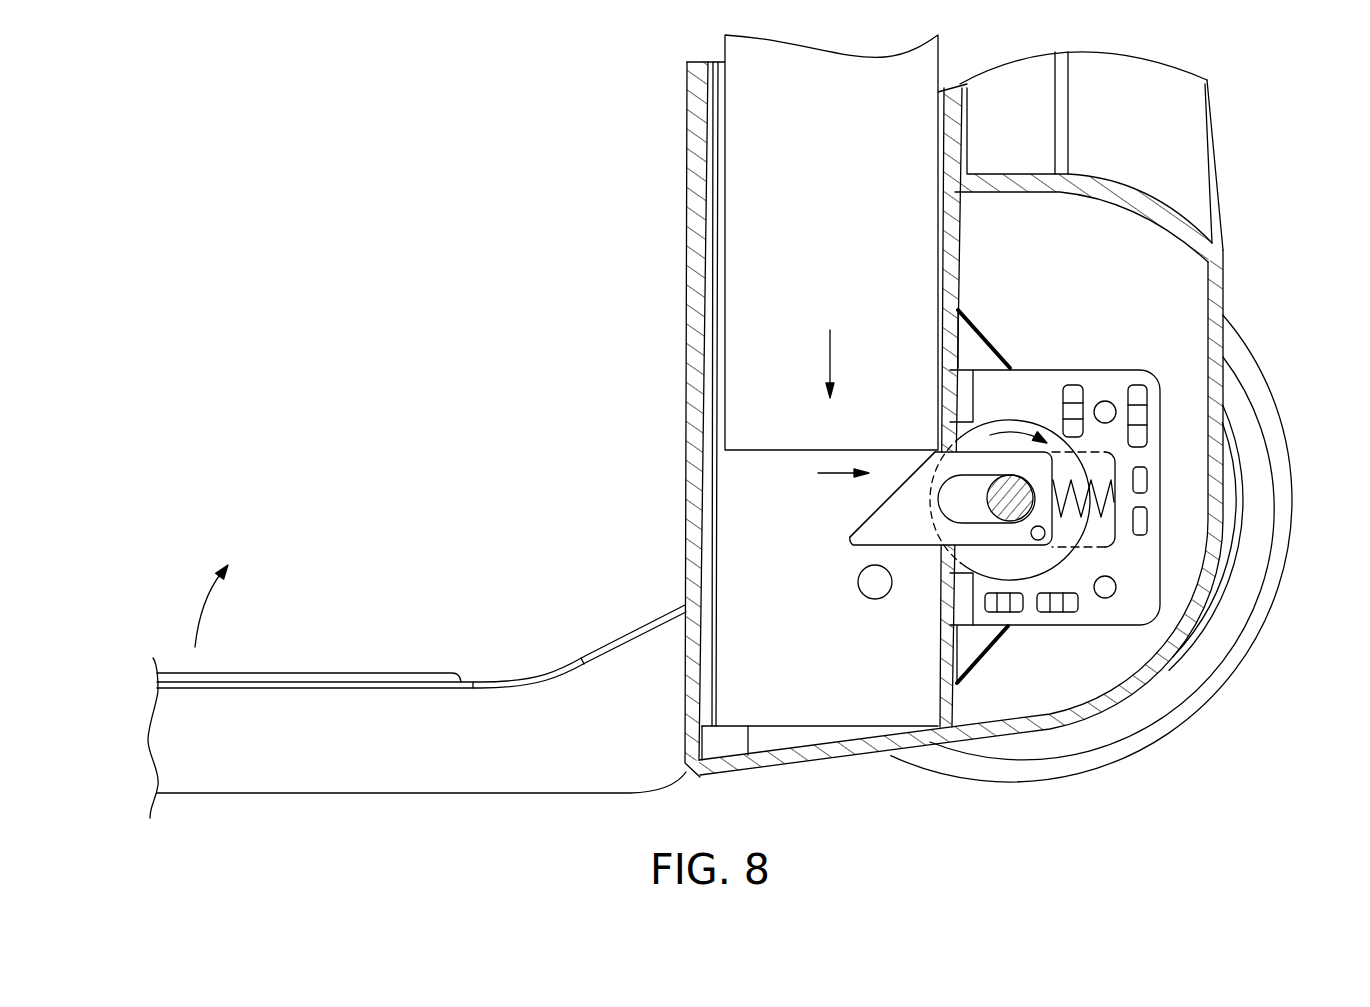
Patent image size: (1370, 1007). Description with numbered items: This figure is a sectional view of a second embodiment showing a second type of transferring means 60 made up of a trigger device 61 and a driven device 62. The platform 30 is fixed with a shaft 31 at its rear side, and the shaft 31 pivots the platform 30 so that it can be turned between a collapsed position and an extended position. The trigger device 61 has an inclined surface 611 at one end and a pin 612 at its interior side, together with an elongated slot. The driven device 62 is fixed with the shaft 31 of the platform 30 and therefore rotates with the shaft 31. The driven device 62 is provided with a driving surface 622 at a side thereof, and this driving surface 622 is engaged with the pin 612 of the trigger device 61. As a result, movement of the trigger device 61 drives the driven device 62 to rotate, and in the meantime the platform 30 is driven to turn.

The platform 30 is at (335, 672).
The shaft 31 is at (1007, 507).
The transferring means 60 is at (1122, 362).
The trigger device 61 is at (913, 533).
The driven device 62 is at (1073, 472).
The inclined surface 611 is at (880, 498).
The pin 612 is at (1036, 540).
The driving surface 622 is at (1090, 512).